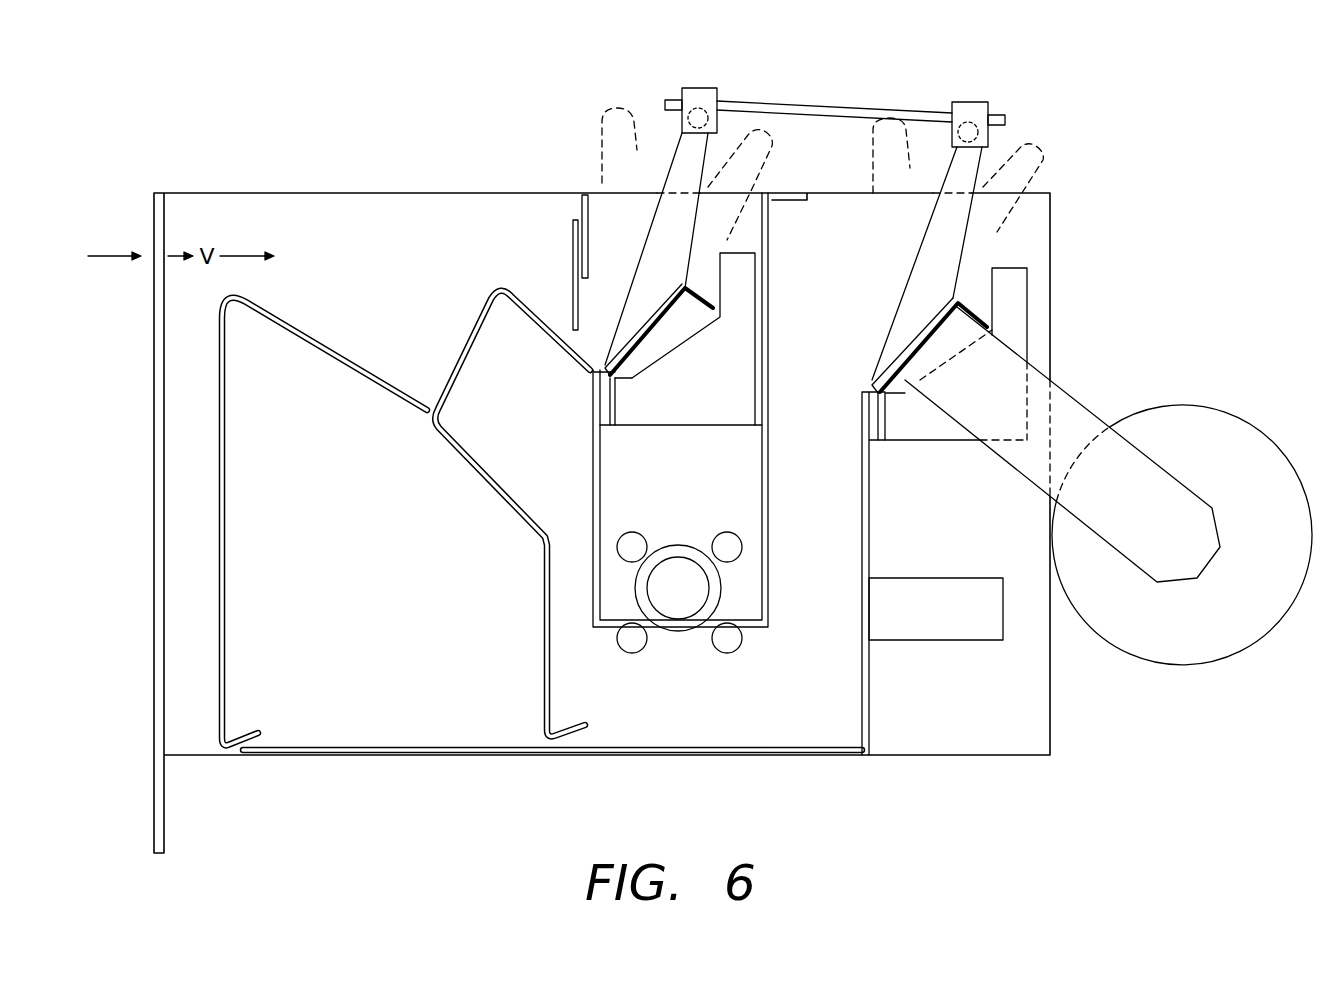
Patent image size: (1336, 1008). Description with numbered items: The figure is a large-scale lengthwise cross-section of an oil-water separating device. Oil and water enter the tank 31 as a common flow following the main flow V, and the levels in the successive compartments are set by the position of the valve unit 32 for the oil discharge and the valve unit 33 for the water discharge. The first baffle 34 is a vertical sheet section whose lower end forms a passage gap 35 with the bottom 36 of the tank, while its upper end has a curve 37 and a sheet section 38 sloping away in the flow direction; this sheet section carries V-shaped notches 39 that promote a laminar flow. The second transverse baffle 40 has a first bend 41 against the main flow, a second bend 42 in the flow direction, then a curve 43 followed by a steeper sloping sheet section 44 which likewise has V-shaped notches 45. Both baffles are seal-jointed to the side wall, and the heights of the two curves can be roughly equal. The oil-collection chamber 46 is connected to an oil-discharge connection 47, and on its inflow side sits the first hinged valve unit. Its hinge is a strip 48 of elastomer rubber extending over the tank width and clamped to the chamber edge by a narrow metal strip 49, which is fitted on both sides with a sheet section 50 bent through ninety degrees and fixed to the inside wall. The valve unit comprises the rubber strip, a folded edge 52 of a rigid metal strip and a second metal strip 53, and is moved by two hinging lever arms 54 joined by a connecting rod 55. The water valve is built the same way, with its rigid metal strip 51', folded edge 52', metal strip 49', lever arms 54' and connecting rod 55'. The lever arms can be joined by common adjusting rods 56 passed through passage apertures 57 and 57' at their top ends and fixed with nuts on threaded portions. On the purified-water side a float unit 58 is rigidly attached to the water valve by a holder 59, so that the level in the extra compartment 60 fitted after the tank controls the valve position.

The tank 31 is at (258, 210).
The valve unit 32 is at (680, 300).
The valve unit 33 is at (953, 327).
The first baffle 34 is at (225, 592).
The passage gap 35 is at (242, 752).
The bottom 36 is at (460, 752).
The curve 37 is at (236, 304).
The sheet section 38 is at (345, 352).
The V-shaped notches 39 is at (410, 388).
The second transverse baffle 40 is at (540, 615).
The first bend 41 is at (542, 527).
The second bend 42 is at (433, 433).
The curve 43 is at (493, 288).
The sloping sheet section 44 is at (528, 300).
The V-shaped notches 45 is at (563, 345).
The oil-collection chamber 46 is at (752, 490).
The oil-discharge connection 47 is at (685, 610).
The strip 48 is at (607, 410).
The metal strip 49 is at (646, 397).
The metal strip 49' is at (926, 442).
The sheet section 50 is at (733, 408).
The rigid metal strip 51' is at (874, 352).
The folded edge 52 is at (726, 339).
The folded edge 52' is at (1040, 350).
The second metal strip 53 is at (672, 290).
The hinging lever arms 54 is at (655, 236).
The hinging lever arms 54' is at (993, 248).
The connecting rod 55 is at (733, 87).
The connecting rod 55' is at (1001, 105).
The adjusting rods 56 is at (807, 110).
The passage apertures 57 is at (657, 83).
The passage apertures 57' is at (961, 98).
The float unit 58 is at (1162, 637).
The holder 59 is at (1060, 407).
The extra compartment 60 is at (962, 733).